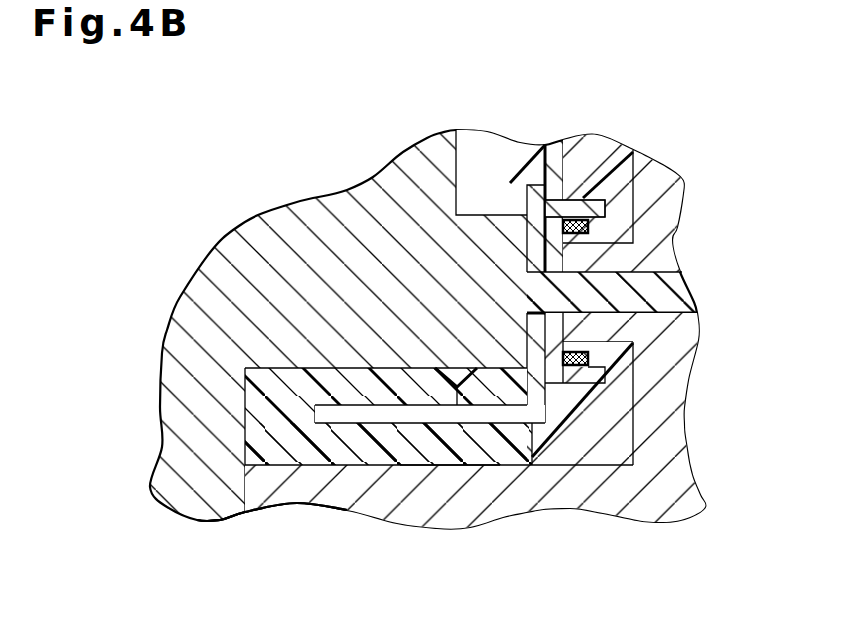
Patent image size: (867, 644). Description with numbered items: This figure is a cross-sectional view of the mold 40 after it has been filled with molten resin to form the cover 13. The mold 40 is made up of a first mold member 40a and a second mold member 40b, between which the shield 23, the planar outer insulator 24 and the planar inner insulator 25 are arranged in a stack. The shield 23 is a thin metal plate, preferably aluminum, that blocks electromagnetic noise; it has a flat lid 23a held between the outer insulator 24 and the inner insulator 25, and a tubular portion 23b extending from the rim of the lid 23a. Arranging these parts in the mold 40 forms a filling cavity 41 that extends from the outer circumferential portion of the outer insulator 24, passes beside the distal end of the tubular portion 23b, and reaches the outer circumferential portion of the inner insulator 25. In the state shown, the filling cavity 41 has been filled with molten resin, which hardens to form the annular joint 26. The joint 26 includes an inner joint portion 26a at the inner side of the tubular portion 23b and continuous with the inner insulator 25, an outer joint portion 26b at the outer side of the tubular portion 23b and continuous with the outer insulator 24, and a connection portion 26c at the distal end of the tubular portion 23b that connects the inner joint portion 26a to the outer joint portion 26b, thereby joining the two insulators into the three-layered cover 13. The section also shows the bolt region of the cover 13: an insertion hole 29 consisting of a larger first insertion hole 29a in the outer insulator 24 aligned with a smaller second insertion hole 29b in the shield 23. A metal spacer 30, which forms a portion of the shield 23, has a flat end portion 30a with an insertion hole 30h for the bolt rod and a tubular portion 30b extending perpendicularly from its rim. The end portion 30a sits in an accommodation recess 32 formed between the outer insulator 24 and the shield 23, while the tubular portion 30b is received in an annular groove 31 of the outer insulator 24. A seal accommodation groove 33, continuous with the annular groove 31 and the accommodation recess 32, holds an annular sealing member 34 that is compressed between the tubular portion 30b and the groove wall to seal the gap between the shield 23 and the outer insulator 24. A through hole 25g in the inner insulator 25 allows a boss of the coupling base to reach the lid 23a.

The cover 13 is at (639, 130).
The inner insulator 25 is at (490, 142).
The accommodation recess 32 is at (527, 205).
The lid 23a is at (553, 155).
The tubular portion 30b is at (597, 193).
The annular groove 31 is at (605, 207).
The seal accommodation groove 33 is at (590, 232).
The second insertion hole 29b is at (540, 305).
The insertion hole 29 is at (768, 255).
The first insertion hole 29a is at (563, 330).
The insertion hole 30h is at (542, 288).
The end portion 30a is at (545, 322).
The outer insulator 24 is at (625, 427).
The spacer 30 is at (578, 385).
The sealing member 34 is at (590, 356).
The inner joint portion 26a is at (352, 368).
The connection portion 26c is at (272, 413).
The tubular portion 23b is at (340, 424).
The through hole 25g is at (497, 357).
The joint 26 is at (353, 467).
The filling cavity 41 is at (423, 452).
The outer joint portion 26b is at (465, 460).
The shield 23 is at (537, 420).
The second mold member 40b is at (220, 513).
The first mold member 40a is at (282, 503).
The mold 40 is at (320, 572).